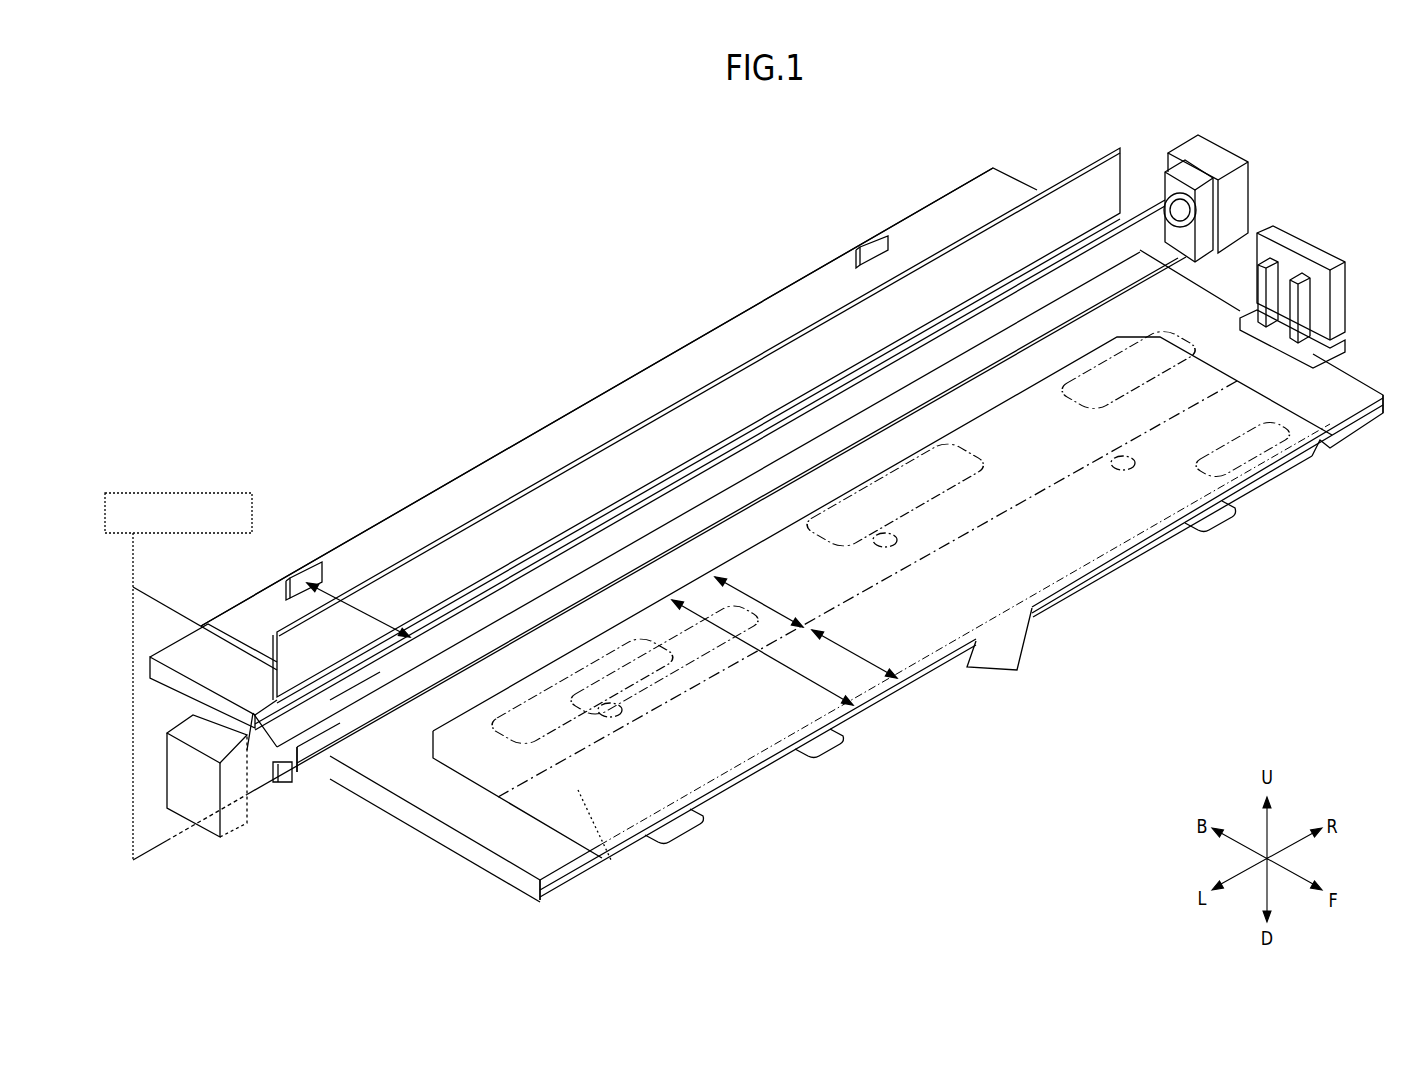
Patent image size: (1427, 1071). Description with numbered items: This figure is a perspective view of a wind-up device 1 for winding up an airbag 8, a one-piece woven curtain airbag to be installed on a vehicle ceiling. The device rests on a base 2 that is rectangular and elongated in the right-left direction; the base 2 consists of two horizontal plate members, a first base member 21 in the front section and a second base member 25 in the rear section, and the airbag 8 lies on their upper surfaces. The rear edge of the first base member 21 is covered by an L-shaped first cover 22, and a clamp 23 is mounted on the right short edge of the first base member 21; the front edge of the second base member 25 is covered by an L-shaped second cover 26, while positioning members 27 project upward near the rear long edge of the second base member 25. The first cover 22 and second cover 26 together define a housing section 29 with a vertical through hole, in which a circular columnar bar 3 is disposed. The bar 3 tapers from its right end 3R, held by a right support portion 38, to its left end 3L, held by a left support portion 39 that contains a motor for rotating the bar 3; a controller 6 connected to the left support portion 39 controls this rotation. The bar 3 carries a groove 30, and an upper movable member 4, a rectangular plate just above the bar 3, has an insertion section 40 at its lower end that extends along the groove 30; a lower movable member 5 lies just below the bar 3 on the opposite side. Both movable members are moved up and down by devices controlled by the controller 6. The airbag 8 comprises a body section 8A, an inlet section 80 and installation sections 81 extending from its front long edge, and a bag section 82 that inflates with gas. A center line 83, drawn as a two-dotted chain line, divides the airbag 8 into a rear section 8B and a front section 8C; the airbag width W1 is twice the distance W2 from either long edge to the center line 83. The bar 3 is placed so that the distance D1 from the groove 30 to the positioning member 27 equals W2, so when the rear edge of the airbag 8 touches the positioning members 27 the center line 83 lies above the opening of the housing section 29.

The wind-up device 1 is at (955, 122).
The base 2 is at (1055, 85).
The first base member 21 is at (1360, 380).
The first cover 22 is at (318, 760).
The clamp 23 is at (1287, 345).
The second base member 25 is at (1020, 165).
The second cover 26 is at (250, 692).
The positioning member 27 is at (312, 572).
The housing section 29 is at (305, 682).
The bar 3 is at (345, 706).
The left end 3L is at (199, 802).
The right end 3R is at (1210, 246).
The groove 30 is at (366, 672).
The right support portion 38 is at (1245, 160).
The left support portion 39 is at (205, 832).
The upper movable member 4 is at (632, 448).
The insertion section 40 is at (530, 557).
The lower movable member 5 is at (290, 776).
The controller 6 is at (176, 493).
The airbag 8 is at (882, 640).
The body section 8A is at (903, 657).
The rear section 8B is at (460, 762).
The front section 8C is at (558, 891).
The inlet section 80 is at (1010, 672).
The installation section 81 is at (688, 840).
The bag section 82 is at (1093, 562).
The center line 83 is at (610, 862).
The width W1 is at (712, 620).
The distance W2 is at (853, 653).
The distance D1 is at (352, 608).